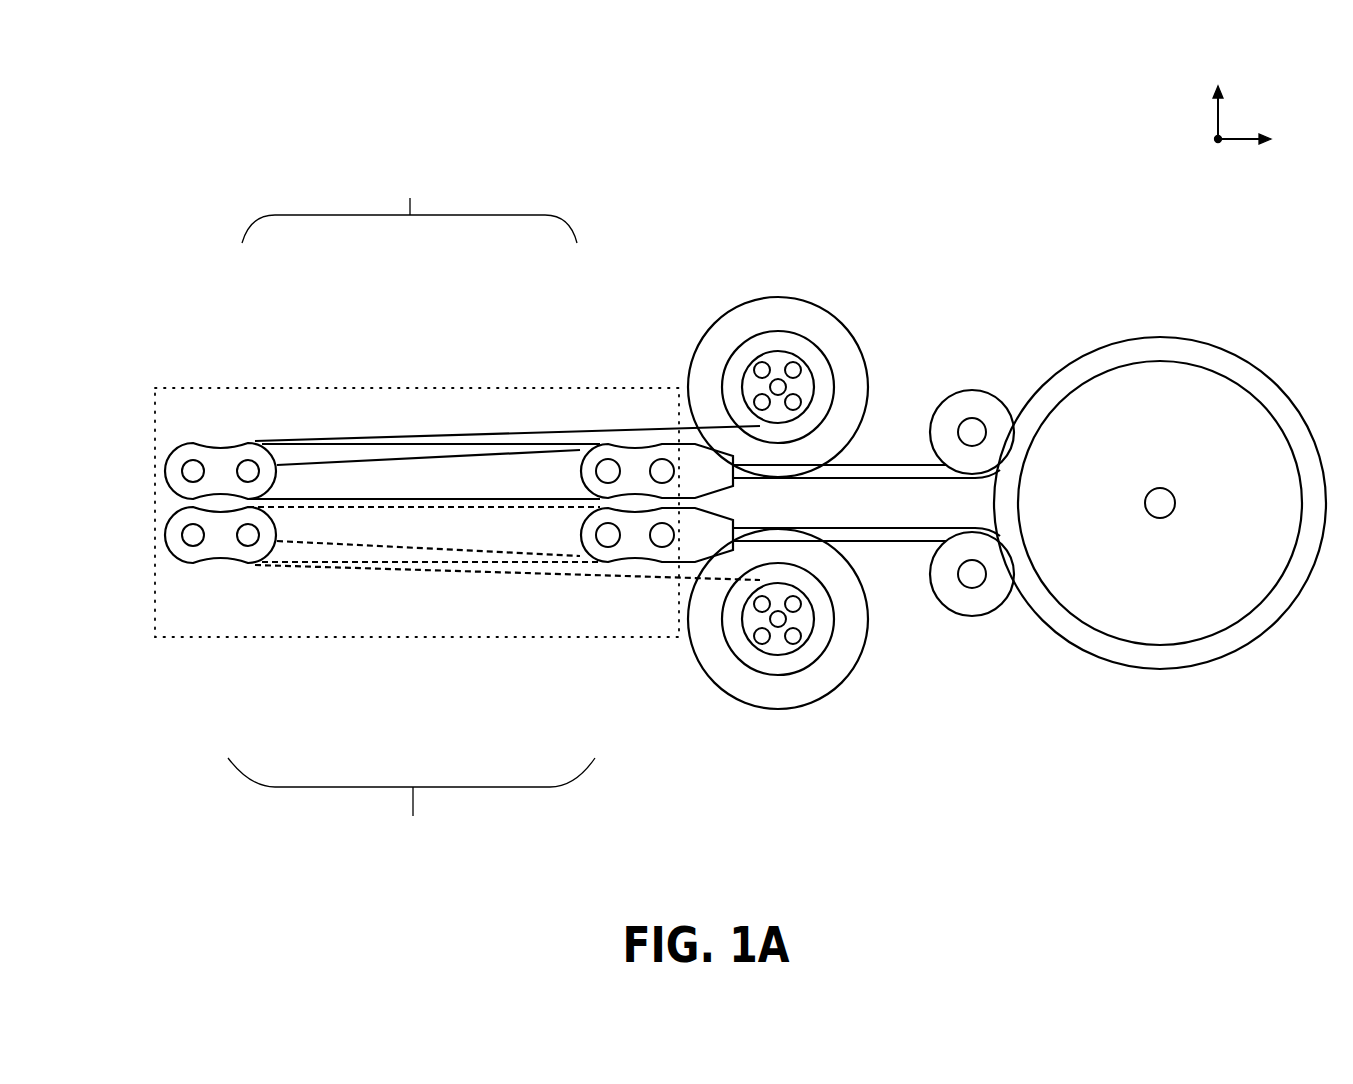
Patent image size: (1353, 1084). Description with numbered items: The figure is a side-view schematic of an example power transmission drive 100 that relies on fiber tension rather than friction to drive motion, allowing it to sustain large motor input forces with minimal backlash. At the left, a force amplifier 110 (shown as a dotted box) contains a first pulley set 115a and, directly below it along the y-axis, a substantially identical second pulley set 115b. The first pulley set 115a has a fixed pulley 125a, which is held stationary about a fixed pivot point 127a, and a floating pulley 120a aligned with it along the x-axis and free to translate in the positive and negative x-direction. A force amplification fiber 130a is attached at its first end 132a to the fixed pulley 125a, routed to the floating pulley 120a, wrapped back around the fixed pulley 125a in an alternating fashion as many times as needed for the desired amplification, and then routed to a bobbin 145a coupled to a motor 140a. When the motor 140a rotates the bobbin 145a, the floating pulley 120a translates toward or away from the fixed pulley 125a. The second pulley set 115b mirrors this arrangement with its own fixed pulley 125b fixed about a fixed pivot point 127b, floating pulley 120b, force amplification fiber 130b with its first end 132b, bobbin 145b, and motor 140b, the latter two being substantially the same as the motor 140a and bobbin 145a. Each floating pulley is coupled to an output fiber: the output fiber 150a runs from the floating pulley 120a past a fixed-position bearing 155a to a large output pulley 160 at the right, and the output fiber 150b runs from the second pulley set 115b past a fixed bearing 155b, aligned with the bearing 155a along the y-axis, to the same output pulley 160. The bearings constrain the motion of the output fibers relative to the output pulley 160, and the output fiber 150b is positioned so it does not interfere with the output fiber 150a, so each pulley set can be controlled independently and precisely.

The power transmission drive 100 is at (171, 63).
The force amplifier 110 is at (172, 392).
The first pulley set 115a is at (409, 175).
The second pulley set 115b is at (411, 828).
The floating pulley 120a is at (630, 460).
The floating pulley 120b is at (632, 548).
The fixed pulley 125a is at (226, 467).
The fixed pulley 125b is at (218, 548).
The fixed pivot point 127a is at (192, 470).
The fixed pivot point 127b is at (192, 540).
The force amplification fiber 130a is at (468, 433).
The force amplification fiber 130b is at (467, 572).
The first end 132a is at (278, 466).
The first end 132b is at (277, 542).
The motor 140a is at (809, 317).
The motor 140b is at (815, 685).
The bobbin 145a is at (770, 360).
The bobbin 145b is at (773, 648).
The output fiber 150a is at (860, 470).
The output fiber 150b is at (883, 533).
The bearing 155a is at (990, 408).
The bearing 155b is at (997, 595).
The output pulley 160 is at (1183, 605).